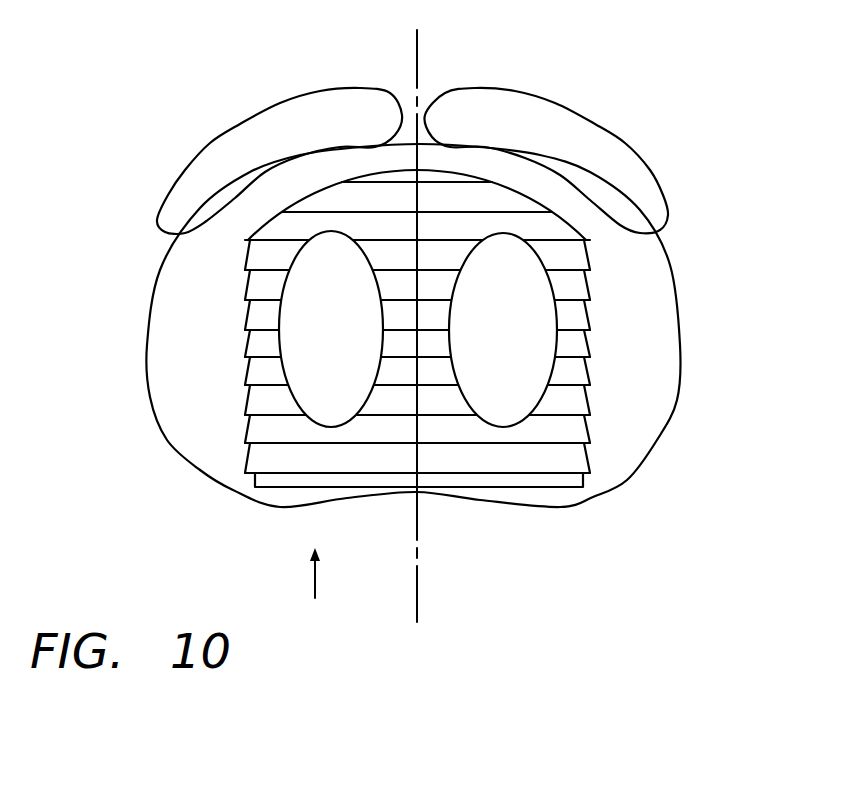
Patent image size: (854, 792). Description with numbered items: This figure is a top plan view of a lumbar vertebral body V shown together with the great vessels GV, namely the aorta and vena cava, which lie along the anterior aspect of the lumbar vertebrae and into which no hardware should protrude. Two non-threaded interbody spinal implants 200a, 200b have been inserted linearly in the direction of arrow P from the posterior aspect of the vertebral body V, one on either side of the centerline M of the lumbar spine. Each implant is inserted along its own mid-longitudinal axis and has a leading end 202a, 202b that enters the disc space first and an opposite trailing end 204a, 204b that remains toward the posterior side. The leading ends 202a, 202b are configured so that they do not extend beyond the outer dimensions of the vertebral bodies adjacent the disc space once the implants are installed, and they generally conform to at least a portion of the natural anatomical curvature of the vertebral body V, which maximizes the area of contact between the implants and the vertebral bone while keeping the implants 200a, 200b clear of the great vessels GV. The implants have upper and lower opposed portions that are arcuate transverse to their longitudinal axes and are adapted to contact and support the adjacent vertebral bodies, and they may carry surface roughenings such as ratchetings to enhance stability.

The interbody spinal implant 200a is at (280, 353).
The interbody spinal implant 200b is at (565, 317).
The leading end 202a is at (362, 178).
The leading end 202b is at (470, 178).
The trailing end 204a is at (285, 487).
The trailing end 204b is at (520, 487).
The great vessels GV is at (203, 143).
The vertebral body V is at (654, 462).
The centerline M is at (438, 318).
The arrow P is at (314, 587).